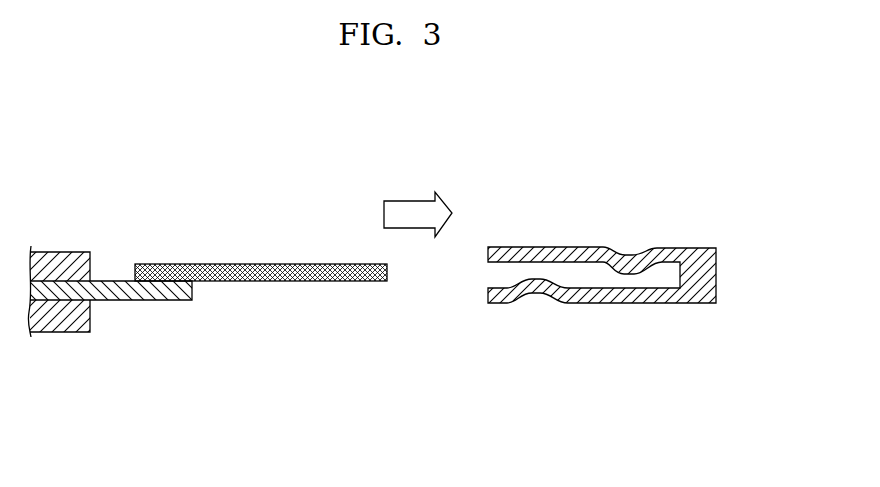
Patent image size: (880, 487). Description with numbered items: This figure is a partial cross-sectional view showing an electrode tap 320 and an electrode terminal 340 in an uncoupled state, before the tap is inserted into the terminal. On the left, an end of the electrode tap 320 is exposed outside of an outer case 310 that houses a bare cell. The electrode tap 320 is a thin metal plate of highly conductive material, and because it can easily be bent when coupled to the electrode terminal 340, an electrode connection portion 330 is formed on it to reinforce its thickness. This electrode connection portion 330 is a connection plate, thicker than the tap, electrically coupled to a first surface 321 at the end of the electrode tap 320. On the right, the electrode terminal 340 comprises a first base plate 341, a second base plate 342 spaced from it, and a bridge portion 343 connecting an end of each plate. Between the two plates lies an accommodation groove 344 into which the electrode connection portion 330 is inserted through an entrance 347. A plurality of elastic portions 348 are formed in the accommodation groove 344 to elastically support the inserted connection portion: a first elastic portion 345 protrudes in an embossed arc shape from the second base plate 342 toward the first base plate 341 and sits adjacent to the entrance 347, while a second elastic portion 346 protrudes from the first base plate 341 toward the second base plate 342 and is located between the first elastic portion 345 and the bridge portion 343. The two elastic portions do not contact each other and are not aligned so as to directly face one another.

The outer case 310 is at (65, 252).
The electrode tap 320 is at (105, 310).
The first surface 321 is at (115, 290).
The electrode connection portion 330 is at (222, 263).
The electrode terminal 340 is at (548, 263).
The first base plate 341 is at (520, 247).
The second base plate 342 is at (580, 303).
The bridge portion 343 is at (716, 288).
The accommodation groove 344 is at (667, 287).
The first elastic portion 345 is at (538, 309).
The second elastic portion 346 is at (637, 247).
The entrance 347 is at (480, 277).
The elastic portions 348 is at (660, 172).